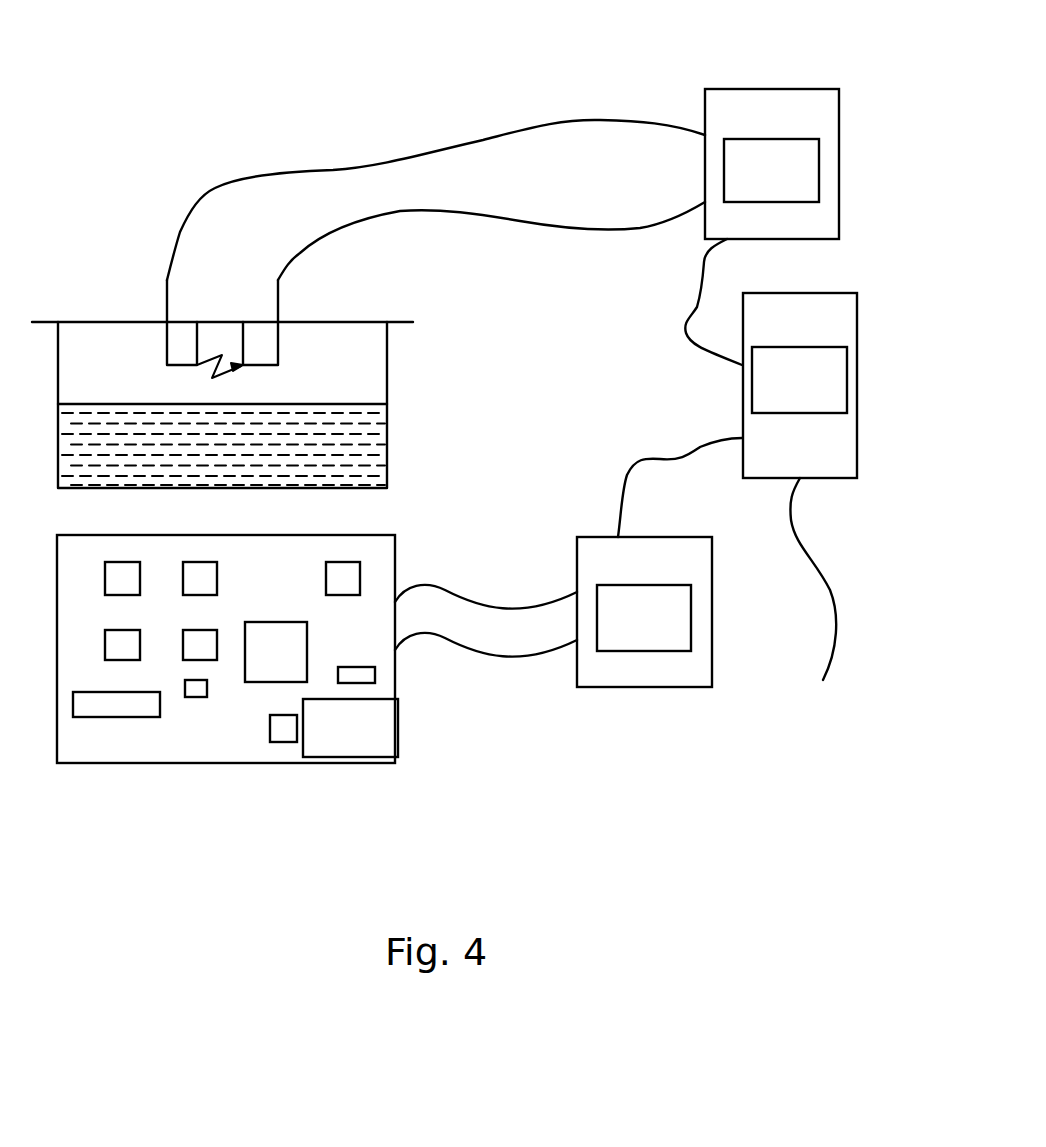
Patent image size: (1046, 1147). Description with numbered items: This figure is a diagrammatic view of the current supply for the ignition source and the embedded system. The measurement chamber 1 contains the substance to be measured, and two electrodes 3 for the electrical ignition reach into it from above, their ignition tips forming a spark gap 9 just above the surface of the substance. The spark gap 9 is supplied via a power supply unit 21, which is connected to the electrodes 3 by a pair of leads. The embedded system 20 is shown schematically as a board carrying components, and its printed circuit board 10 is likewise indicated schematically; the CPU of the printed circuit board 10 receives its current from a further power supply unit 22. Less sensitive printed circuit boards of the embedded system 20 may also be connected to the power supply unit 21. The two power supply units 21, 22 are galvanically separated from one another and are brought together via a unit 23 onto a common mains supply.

The measurement chamber 1 is at (388, 377).
The electrodes 3 is at (165, 305).
The spark gap 9 is at (214, 372).
The printed circuit board 10 is at (388, 717).
The embedded system 20 is at (185, 740).
The power supply unit 21 is at (755, 88).
The further power supply unit 22 is at (670, 687).
The unit 23 is at (742, 408).